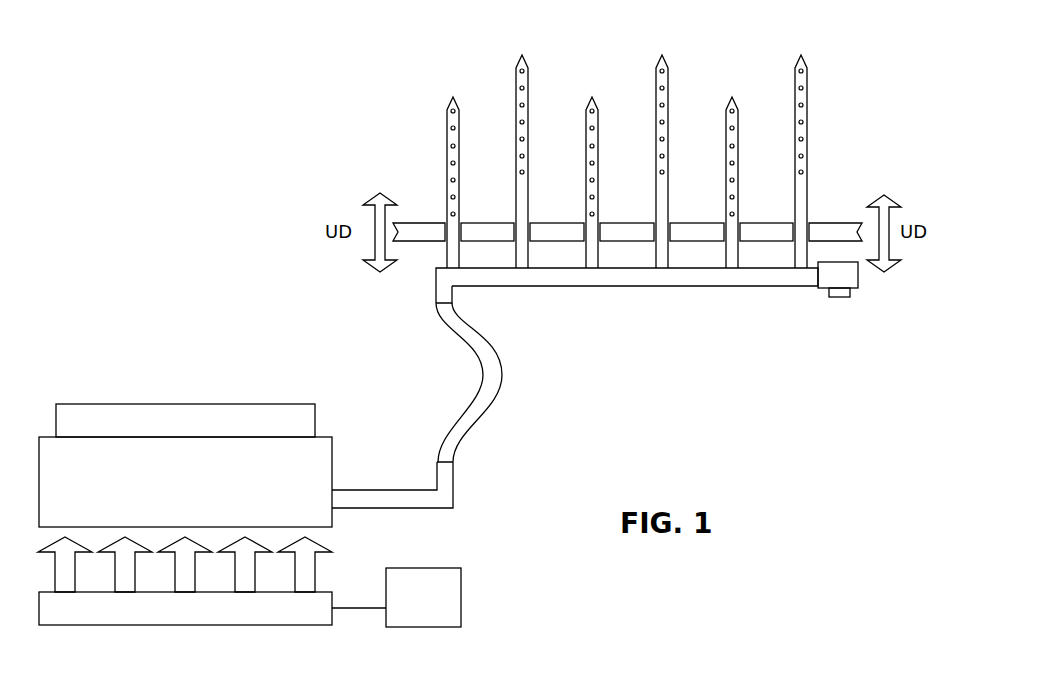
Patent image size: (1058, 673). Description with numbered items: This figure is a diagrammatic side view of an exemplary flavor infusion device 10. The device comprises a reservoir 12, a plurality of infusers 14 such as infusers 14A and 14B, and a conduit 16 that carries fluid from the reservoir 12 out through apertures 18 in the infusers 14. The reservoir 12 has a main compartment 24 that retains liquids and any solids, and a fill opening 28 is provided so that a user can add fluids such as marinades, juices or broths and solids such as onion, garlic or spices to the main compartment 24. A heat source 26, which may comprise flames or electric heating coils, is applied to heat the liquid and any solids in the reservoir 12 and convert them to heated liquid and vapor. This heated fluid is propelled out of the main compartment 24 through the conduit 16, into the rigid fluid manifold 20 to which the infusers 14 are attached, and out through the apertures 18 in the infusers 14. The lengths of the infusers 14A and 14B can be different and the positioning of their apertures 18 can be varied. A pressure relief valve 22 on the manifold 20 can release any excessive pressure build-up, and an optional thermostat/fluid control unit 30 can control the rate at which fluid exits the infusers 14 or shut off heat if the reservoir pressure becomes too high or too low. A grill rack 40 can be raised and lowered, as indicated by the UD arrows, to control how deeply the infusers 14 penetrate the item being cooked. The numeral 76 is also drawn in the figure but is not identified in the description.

The flavor infusion device 10 is at (172, 260).
The reservoir 12 is at (351, 420).
The infusers 14 is at (402, 137).
The infuser 14A is at (419, 109).
The infuser 14B is at (545, 73).
The conduit 16 is at (526, 406).
The apertures 18 is at (519, 104).
The fluid manifold 20 is at (643, 274).
The pressure relief valve 22 is at (852, 284).
The main compartment 24 is at (320, 472).
The heat source 26 is at (133, 610).
The fill opening 28 is at (152, 420).
The thermostat/fluid control unit 30 is at (455, 590).
The grill rack 40 is at (757, 223).
The power source 76 is at (329, 672).